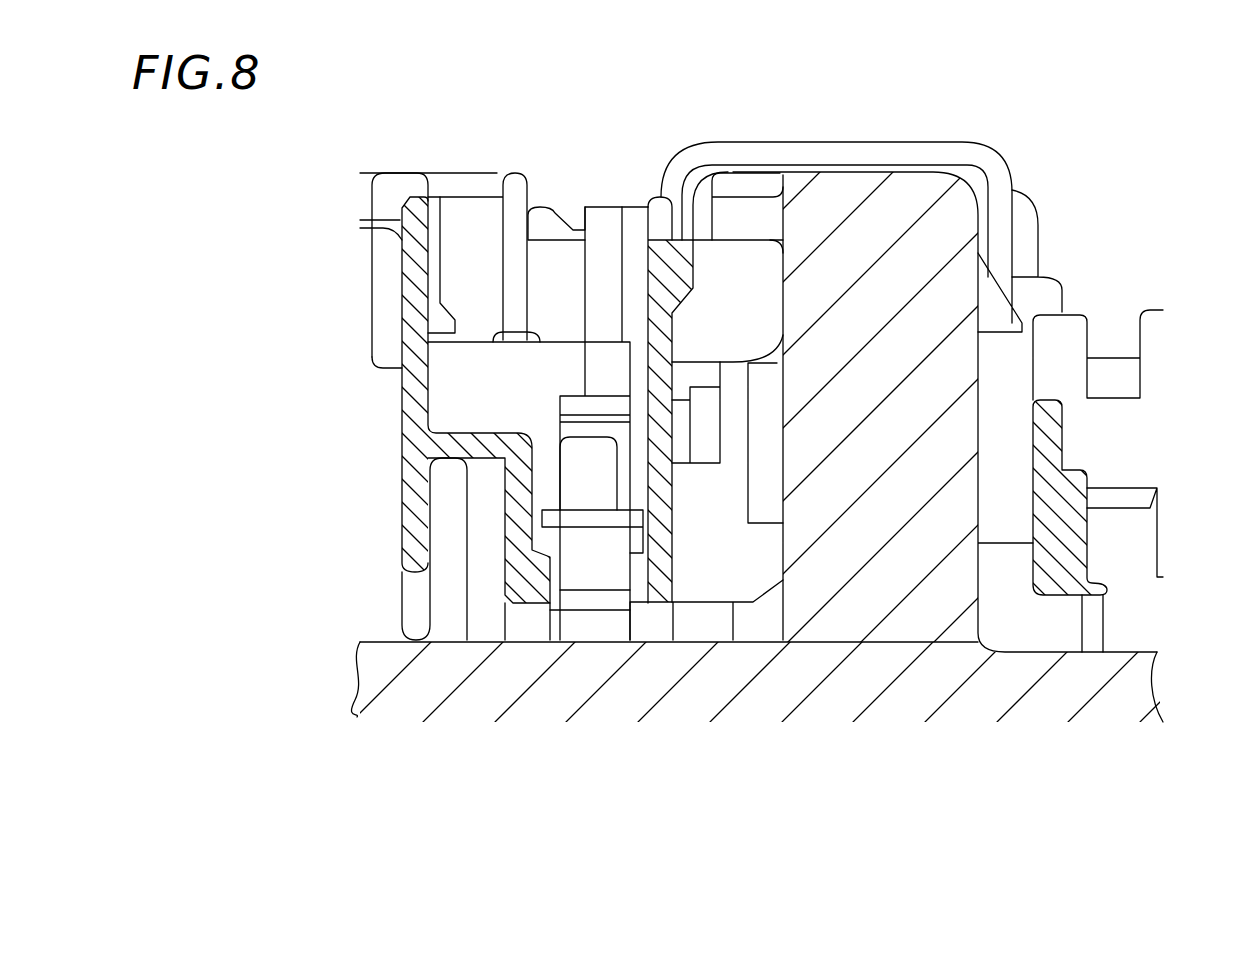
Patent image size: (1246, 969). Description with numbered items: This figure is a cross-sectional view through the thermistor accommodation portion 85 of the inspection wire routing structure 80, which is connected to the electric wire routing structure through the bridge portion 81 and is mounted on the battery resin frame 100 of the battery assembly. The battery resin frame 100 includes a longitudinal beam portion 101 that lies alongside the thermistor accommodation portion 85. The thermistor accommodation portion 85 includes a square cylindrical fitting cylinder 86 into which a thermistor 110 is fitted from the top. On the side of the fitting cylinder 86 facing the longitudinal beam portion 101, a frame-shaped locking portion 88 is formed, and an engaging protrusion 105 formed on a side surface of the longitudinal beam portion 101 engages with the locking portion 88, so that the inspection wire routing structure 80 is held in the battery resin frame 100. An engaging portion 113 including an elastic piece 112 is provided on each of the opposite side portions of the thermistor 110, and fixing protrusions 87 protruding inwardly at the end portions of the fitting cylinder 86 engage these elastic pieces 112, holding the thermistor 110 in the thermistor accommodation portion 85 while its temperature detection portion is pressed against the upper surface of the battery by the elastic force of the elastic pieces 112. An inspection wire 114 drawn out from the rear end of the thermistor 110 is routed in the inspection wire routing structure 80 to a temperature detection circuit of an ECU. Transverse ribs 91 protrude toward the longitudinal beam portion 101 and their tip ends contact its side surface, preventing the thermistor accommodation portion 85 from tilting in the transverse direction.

The inspection wire routing structure 80 is at (362, 133).
The bridge portion 81 is at (878, 142).
The thermistor accommodation portion 85 is at (523, 393).
The fitting cylinder 86 is at (485, 500).
The fixing protrusion 87 is at (575, 487).
The locking portion 88 is at (733, 480).
The transverse rib 91 is at (780, 290).
The battery resin frame 100 is at (1150, 652).
The longitudinal beam portion 101 is at (792, 192).
The engaging protrusion 105 is at (763, 228).
The thermistor 110 is at (578, 548).
The elastic piece 112 is at (587, 572).
The engaging portion 113 is at (577, 404).
The inspection wire 114 is at (597, 218).